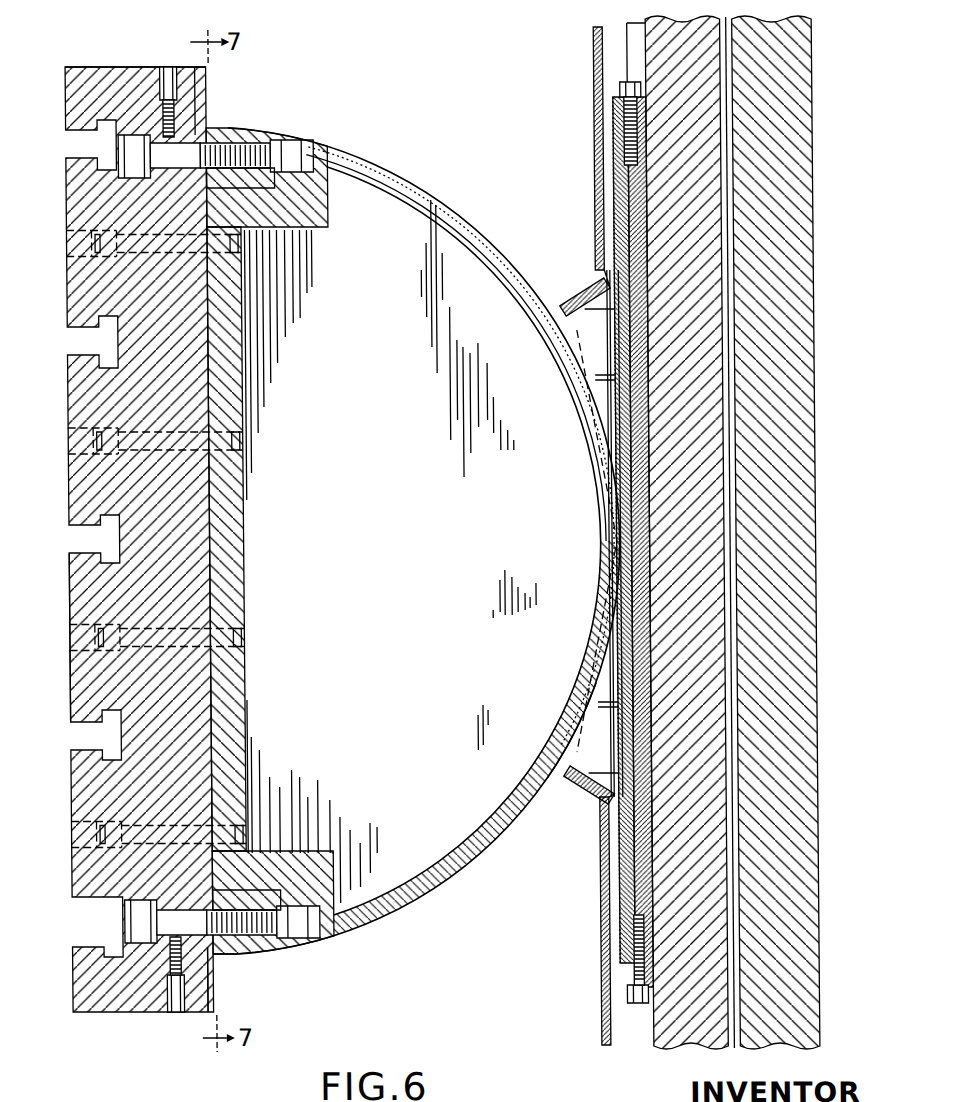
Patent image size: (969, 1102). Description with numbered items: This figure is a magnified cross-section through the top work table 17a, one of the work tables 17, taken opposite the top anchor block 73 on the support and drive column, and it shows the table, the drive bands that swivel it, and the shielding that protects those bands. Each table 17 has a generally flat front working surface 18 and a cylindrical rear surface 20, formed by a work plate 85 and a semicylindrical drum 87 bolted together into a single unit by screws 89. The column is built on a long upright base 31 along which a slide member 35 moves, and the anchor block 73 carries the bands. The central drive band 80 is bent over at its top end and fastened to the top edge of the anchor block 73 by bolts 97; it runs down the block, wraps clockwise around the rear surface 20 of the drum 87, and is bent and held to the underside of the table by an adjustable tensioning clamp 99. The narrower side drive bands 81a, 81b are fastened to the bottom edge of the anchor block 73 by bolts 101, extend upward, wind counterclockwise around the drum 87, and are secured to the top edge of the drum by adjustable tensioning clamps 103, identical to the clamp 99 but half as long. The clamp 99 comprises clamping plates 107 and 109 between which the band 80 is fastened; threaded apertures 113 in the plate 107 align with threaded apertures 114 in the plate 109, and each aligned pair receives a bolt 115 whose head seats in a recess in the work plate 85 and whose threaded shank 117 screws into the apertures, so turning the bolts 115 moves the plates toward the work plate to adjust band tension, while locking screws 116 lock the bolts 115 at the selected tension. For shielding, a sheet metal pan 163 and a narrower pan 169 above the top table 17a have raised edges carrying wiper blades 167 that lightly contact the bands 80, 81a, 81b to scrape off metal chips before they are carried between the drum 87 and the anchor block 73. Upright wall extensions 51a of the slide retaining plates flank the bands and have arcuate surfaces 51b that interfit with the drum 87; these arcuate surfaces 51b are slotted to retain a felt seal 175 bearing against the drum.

The work tables 17 is at (59, 1021).
The top work table 17a is at (107, 65).
The front working surface 18 is at (64, 571).
The rear surface 20 is at (505, 827).
The base 31 is at (800, 62).
The slide member 35 is at (660, 47).
The wall extensions 51a is at (590, 342).
The arcuate surfaces 51b is at (587, 373).
The anchor block 73 is at (626, 875).
The central drive band 80 is at (412, 897).
The side drive band 81a is at (436, 190).
The side drive band 81b is at (612, 898).
The work plate 85 is at (84, 670).
The drum 87 is at (436, 863).
The screws 89 is at (64, 284).
The bolts 97 is at (619, 87).
The adjustable tensioning clamp 99 is at (270, 990).
The bolts 101 is at (617, 993).
The adjustable tensioning clamps 103 is at (246, 103).
The clamping plate 107 is at (262, 947).
The clamping plate 109 is at (215, 955).
The threaded apertures 113 is at (279, 893).
The threaded apertures 114 is at (243, 853).
The bolt 115 is at (135, 927).
The locking screws 116 is at (177, 970).
The threaded shank 117 is at (237, 957).
The pan 163 is at (591, 1030).
The wiper blades 167 is at (545, 307).
The pan 169 is at (643, 198).
The felt seal 175 is at (571, 722).